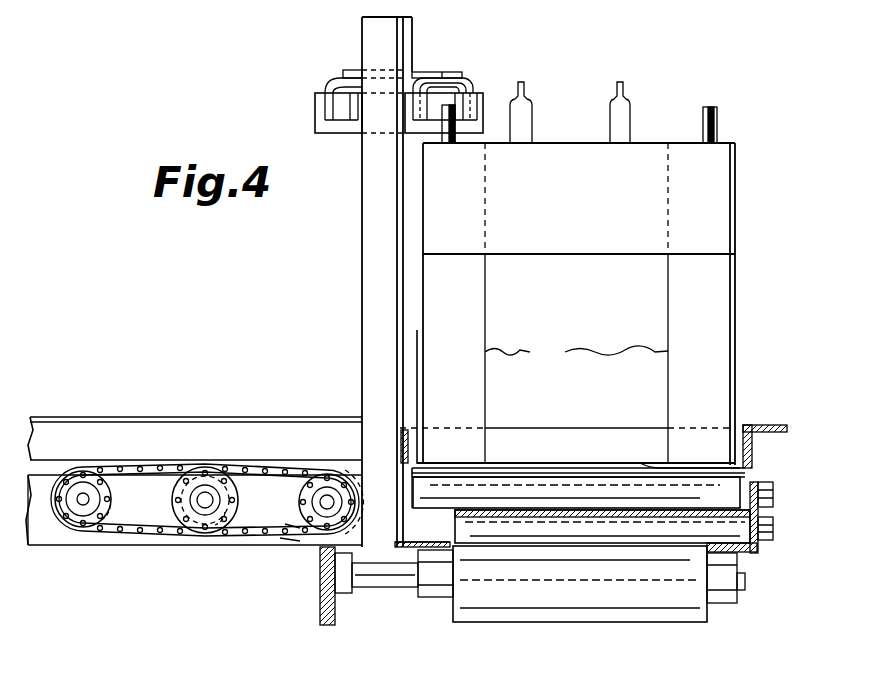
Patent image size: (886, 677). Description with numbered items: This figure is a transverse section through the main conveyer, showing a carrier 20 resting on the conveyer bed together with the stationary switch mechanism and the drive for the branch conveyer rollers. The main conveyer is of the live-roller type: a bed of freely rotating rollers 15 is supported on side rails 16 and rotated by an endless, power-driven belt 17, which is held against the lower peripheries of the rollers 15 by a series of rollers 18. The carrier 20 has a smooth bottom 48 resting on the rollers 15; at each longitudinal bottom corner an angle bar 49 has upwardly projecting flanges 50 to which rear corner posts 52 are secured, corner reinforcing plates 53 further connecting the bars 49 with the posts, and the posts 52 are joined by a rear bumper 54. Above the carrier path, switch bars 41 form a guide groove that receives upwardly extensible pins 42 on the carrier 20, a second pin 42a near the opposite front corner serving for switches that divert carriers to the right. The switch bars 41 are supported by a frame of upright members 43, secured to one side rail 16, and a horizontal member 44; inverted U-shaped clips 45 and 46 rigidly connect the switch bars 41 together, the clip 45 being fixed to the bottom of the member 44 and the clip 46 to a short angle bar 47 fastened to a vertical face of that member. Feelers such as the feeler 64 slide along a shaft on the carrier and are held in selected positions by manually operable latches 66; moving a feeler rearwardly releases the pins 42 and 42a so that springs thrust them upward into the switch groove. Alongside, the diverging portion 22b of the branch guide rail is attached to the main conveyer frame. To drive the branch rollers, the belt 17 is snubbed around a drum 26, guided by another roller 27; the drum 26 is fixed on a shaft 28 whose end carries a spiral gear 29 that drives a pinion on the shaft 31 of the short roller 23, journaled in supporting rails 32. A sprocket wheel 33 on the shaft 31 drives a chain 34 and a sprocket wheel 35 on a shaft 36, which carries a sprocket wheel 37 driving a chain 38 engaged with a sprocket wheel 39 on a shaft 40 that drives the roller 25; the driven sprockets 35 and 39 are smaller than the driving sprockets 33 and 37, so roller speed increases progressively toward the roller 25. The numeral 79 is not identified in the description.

The rollers 15 is at (507, 492).
The side rails 16 is at (768, 512).
The belt 17 is at (593, 508).
The rollers 18 is at (492, 528).
The carrier 20 is at (737, 390).
The diverging portion of guide rail 22b is at (75, 425).
The roller 23 is at (292, 504).
The roller 25 is at (116, 530).
The drum 26 is at (562, 622).
The roller 27 is at (660, 590).
The shaft 28 is at (400, 588).
The spiral gear 29 is at (332, 625).
The shaft 31 is at (327, 500).
The supporting rails 32 is at (75, 537).
The sprocket wheel 33 is at (287, 542).
The chain 34 is at (292, 528).
The sprocket wheel 35 is at (222, 530).
The shaft 36 is at (206, 500).
The sprocket wheel 37 is at (165, 512).
The chain 38 is at (142, 468).
The sprocket wheel 39 is at (52, 547).
The shaft 40 is at (100, 498).
The switch bars 41 is at (458, 102).
The pin 42 is at (446, 143).
The pin 42a is at (718, 118).
The upright members 43 is at (370, 264).
The horizontal member 44 is at (413, 24).
The clip 45 is at (478, 90).
The clip 46 is at (325, 95).
The angle bar 47 is at (352, 70).
The bottom 48 is at (745, 476).
The angle bar 49 is at (643, 467).
The flanges 50 is at (745, 425).
The rear corner posts 52 is at (576, 352).
The corner reinforcing plates 53 is at (416, 343).
The rear bumper 54 is at (579, 198).
The feeler 64 is at (533, 92).
The latch 66 is at (631, 90).
The bracket 79 is at (753, 450).